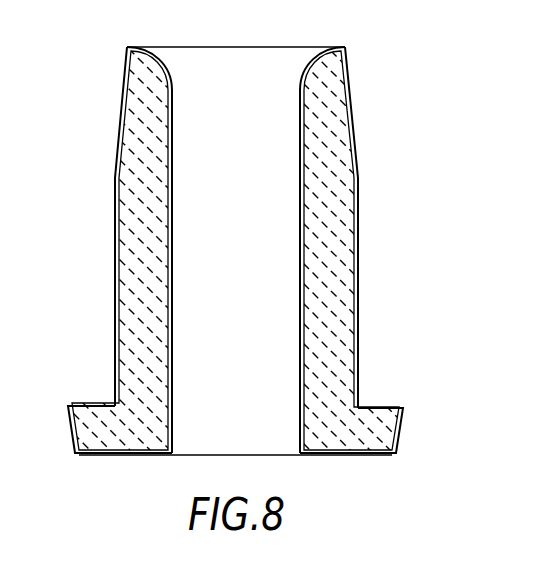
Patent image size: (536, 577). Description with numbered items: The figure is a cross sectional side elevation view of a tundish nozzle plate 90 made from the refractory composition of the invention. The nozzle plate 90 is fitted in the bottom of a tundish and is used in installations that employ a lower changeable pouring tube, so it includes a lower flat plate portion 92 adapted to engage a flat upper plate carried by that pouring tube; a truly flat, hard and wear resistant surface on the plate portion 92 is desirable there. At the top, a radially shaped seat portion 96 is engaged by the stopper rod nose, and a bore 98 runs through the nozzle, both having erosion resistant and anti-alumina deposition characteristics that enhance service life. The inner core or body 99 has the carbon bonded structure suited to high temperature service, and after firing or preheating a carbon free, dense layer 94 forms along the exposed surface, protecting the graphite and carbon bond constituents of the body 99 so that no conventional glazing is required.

The tundish nozzle plate 90 is at (378, 197).
The lower flat plate portion 92 is at (150, 455).
The carbon free, dense layer 94 is at (115, 237).
The seat portion 96 is at (165, 58).
The bore 98 is at (261, 162).
The inner core or body 99 is at (125, 340).